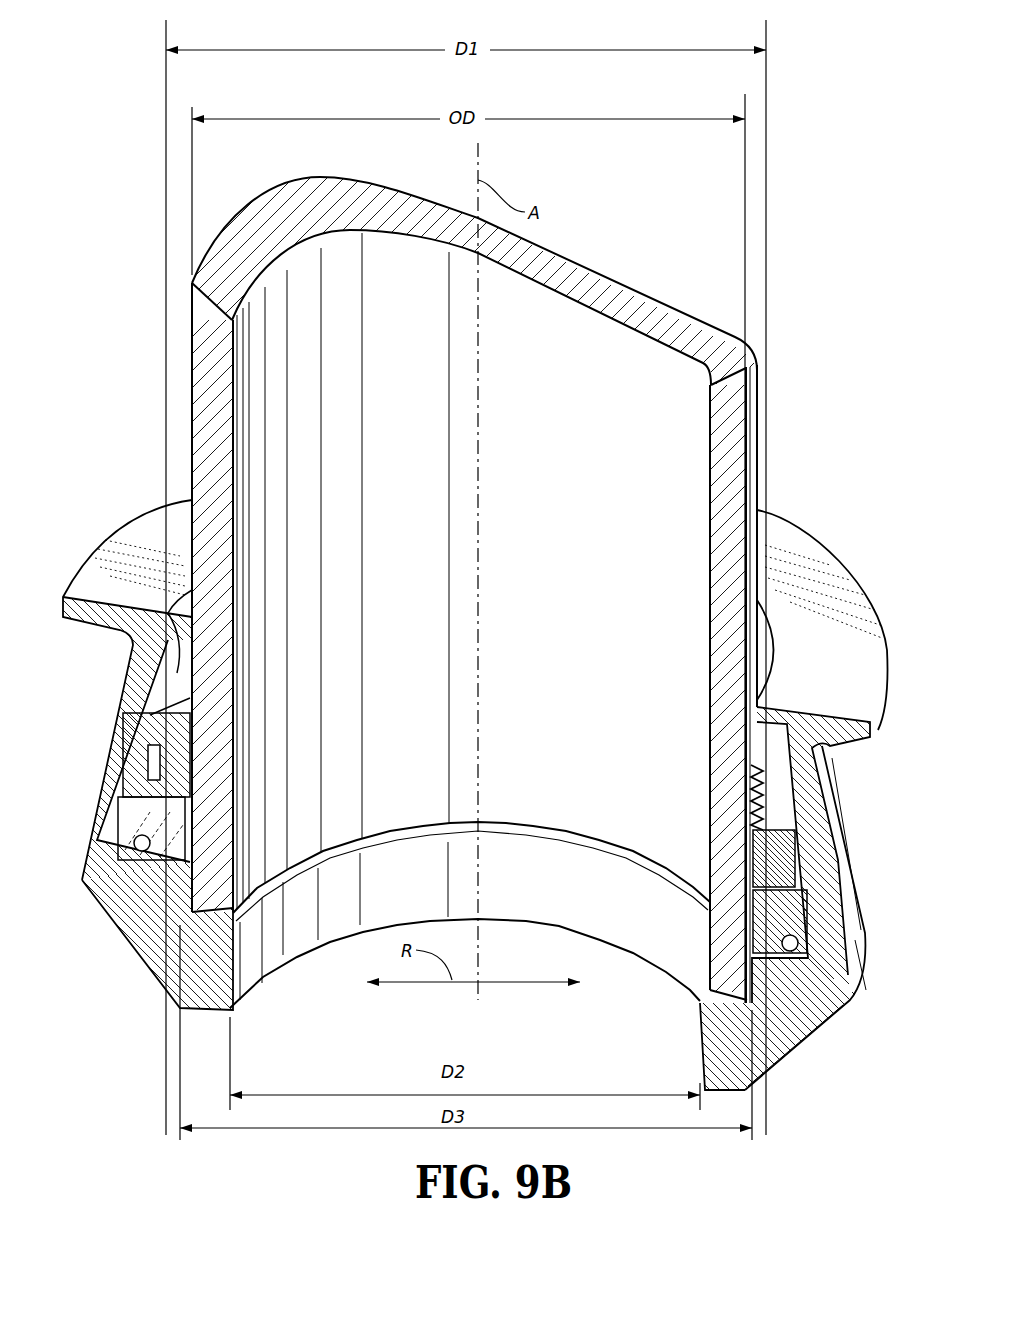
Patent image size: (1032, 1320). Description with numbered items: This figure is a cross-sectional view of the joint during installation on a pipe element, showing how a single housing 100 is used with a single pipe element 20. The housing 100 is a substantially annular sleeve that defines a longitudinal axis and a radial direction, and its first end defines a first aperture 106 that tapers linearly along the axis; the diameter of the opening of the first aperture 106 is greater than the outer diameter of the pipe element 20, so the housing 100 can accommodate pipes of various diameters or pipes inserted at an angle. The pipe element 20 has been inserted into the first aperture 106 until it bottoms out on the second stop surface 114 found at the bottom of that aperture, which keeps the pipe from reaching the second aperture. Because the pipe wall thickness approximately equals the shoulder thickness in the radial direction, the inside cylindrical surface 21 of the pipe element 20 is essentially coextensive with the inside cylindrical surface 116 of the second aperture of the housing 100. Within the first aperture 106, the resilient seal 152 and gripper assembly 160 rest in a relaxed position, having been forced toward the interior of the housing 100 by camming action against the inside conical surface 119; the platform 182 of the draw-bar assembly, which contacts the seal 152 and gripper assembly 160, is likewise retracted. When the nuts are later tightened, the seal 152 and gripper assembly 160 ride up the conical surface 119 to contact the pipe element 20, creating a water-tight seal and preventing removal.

The pipe element 20 is at (625, 372).
The inside cylindrical surface 21 is at (594, 688).
The housing 100 is at (823, 527).
The first aperture 106 is at (168, 617).
The second stop surface 114 is at (233, 915).
The inside cylindrical surface 116 is at (637, 912).
The inside conical surface 119 is at (165, 640).
The seal 152 is at (172, 857).
The gripper assembly 160 is at (775, 826).
The platform 182 is at (846, 985).